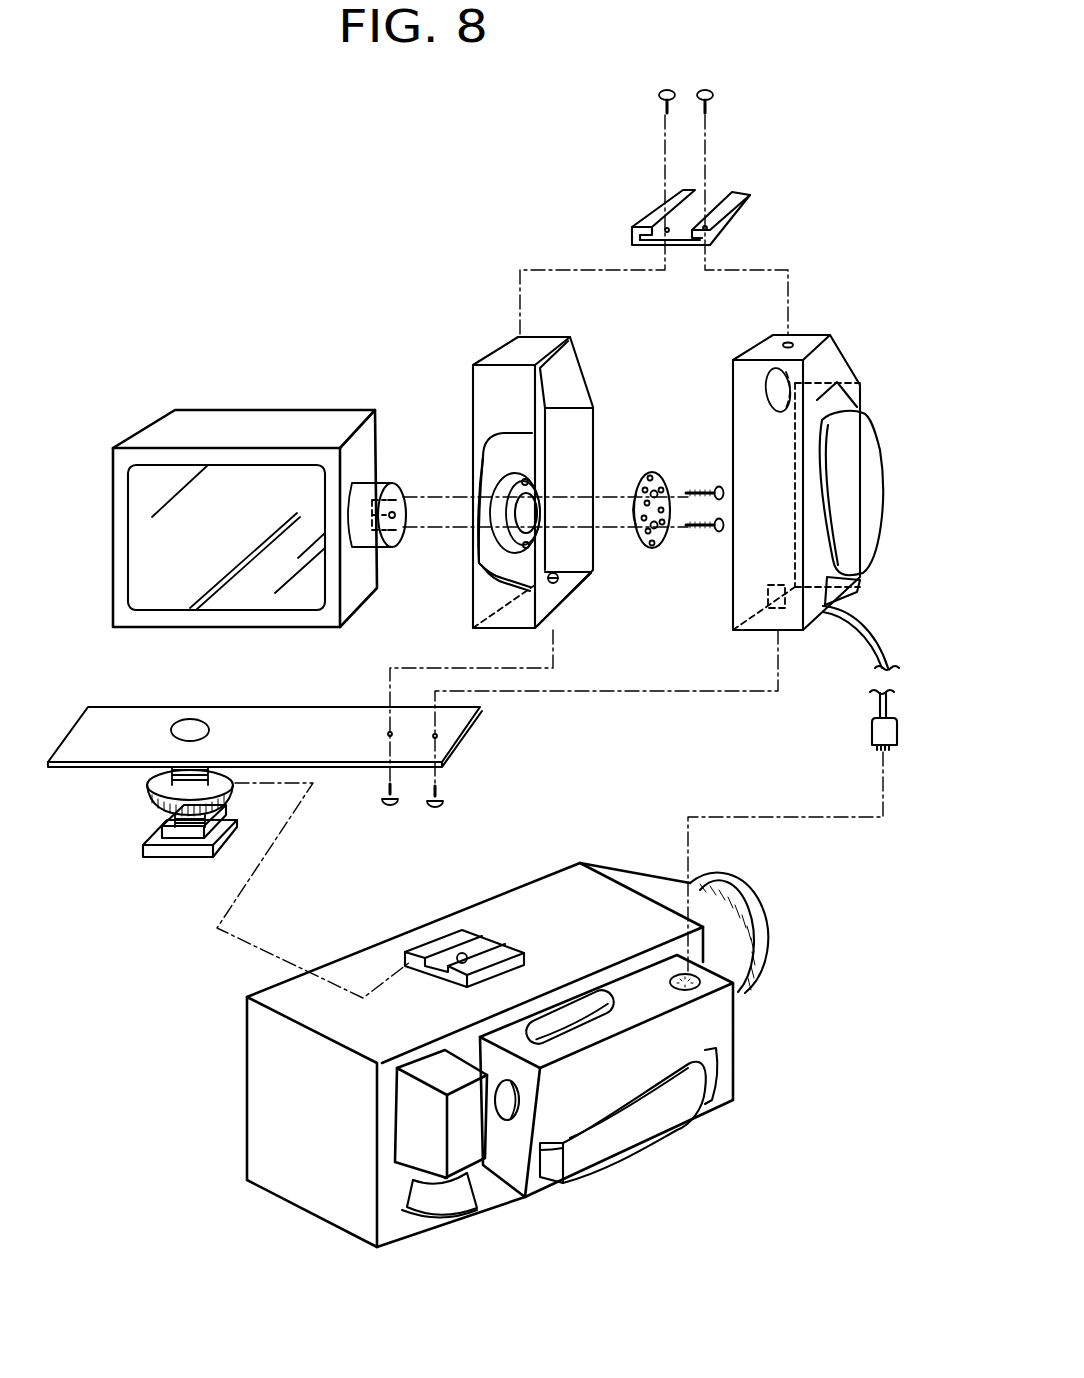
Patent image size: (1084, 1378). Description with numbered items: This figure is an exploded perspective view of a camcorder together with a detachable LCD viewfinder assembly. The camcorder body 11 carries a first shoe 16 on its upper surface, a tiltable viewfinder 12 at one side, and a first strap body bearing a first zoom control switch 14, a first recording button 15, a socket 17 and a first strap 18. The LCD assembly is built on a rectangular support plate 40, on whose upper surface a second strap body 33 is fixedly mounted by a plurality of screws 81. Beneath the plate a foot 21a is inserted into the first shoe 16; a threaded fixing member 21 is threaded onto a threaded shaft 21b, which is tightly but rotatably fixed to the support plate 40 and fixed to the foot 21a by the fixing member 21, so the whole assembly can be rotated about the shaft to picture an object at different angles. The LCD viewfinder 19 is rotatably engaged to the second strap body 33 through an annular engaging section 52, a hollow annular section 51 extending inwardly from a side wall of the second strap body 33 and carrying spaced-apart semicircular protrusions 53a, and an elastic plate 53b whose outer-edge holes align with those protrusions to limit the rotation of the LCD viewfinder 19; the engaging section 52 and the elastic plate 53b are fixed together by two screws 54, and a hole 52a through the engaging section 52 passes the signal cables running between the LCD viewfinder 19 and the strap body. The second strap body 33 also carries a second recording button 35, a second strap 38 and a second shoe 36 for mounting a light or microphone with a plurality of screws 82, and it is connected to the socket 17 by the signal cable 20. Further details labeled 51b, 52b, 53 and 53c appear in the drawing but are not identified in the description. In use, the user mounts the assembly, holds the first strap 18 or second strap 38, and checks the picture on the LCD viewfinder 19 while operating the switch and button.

The camcorder body 11 is at (553, 900).
The viewfinder 12 is at (407, 1123).
The first zoom control switch 14 is at (596, 1022).
The first recording button 15 is at (507, 1115).
The first shoe 16 is at (483, 938).
The socket 17 is at (700, 967).
The first strap 18 is at (660, 1127).
The LCD viewfinder 19 is at (307, 425).
The signal cable 20 is at (867, 638).
The threaded fixing member 21 is at (147, 835).
The foot 21a is at (183, 848).
The threaded shaft 21b is at (155, 772).
The second strap body 33 is at (562, 373).
The second recording button 35 is at (780, 390).
The second shoe 36 is at (738, 195).
The second strap 38 is at (863, 470).
The support plate 40 is at (288, 723).
The hollow annular section 51 is at (508, 478).
The plate edge 51b is at (470, 583).
The annular engaging section 52 is at (392, 487).
The hole 52a is at (382, 490).
The knob center hole 52b is at (396, 517).
The connector plate 53 is at (650, 473).
The semicircular protrusions 53a is at (650, 543).
The elastic plate 53b is at (656, 492).
The edge 53c is at (636, 508).
The screws 54 is at (704, 514).
The screws 81 is at (387, 804).
The screws 82 is at (660, 97).